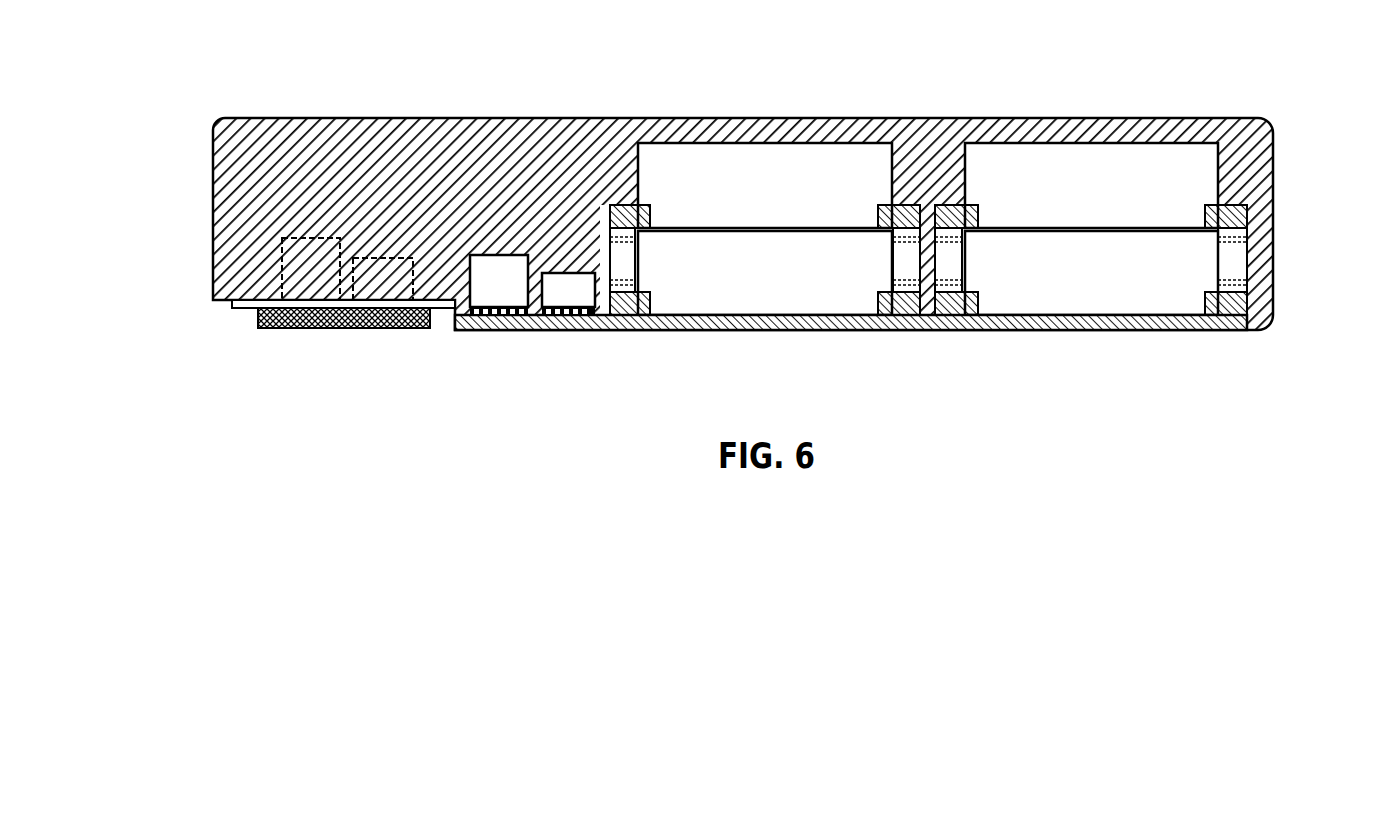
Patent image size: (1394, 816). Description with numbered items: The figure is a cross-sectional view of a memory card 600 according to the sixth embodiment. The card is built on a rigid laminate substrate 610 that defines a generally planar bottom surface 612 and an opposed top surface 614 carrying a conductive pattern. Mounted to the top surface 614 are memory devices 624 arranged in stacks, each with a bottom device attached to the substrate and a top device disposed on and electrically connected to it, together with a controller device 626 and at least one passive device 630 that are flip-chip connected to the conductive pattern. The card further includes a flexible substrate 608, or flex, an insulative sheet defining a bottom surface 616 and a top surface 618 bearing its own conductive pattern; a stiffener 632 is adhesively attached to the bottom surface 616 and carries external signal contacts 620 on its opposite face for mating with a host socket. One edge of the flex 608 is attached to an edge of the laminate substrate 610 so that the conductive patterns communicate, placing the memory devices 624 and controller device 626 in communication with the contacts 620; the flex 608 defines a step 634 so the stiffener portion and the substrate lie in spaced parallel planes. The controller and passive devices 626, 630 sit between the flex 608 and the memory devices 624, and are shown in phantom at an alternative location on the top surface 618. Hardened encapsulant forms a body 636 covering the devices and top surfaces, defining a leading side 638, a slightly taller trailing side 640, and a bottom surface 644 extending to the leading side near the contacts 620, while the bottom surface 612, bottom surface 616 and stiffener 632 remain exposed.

The memory card 600 is at (1187, 106).
The flexible substrate 608 is at (220, 316).
The rigid laminate substrate 610 is at (1234, 336).
The bottom surface 612 is at (1007, 330).
The top surface 614 is at (1270, 294).
The bottom surface 616 is at (438, 309).
The top surface 618 is at (245, 300).
The external signal contacts 620 is at (272, 330).
The memory devices 624 is at (790, 197).
The controller device 626 is at (497, 256).
The passive device 630 is at (573, 274).
The stiffener 632 is at (257, 312).
The step 634 is at (450, 314).
The body 636 is at (928, 118).
The leading side 638 is at (213, 150).
The trailing side 640 is at (1274, 143).
The bottom surface 644 is at (232, 306).